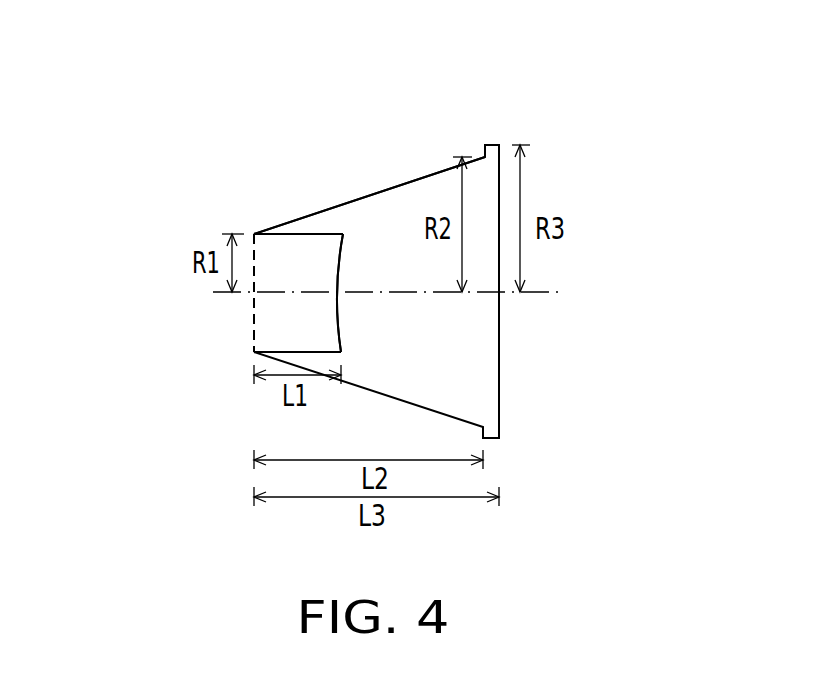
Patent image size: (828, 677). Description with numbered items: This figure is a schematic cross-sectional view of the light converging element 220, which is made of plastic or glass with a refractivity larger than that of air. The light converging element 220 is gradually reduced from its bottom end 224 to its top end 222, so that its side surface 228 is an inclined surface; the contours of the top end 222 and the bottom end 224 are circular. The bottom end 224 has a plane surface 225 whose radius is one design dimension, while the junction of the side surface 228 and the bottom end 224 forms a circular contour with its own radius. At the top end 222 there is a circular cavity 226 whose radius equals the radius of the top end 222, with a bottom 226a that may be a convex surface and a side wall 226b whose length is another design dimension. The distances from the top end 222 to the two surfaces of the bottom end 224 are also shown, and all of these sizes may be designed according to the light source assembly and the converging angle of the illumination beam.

The light converging element 220 is at (369, 208).
The top end 222 is at (250, 337).
The bottom end 224 is at (490, 440).
The plane surface 225 is at (500, 357).
The cavity 226 is at (284, 308).
The bottom of the cavity 226a is at (336, 265).
The side wall 226b is at (281, 236).
The side surface 228 is at (417, 176).